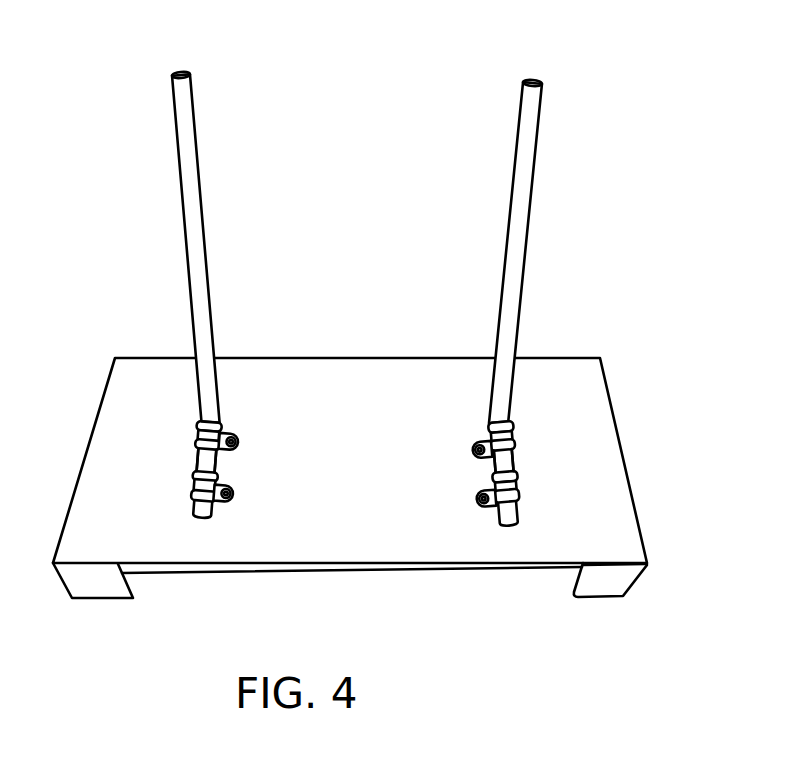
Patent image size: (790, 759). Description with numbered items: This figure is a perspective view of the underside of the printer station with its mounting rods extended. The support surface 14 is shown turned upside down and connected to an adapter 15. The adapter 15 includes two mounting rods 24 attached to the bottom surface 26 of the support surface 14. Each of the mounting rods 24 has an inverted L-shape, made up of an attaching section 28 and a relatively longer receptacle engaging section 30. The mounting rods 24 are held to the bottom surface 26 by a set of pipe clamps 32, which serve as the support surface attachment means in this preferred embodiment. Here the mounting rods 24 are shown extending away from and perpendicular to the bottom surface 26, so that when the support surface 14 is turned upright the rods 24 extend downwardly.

The support surface 14 is at (376, 350).
The adapter 15 is at (463, 229).
The mounting rods 24 is at (351, 350).
The bottom surface 26 is at (357, 518).
The attaching section 28 is at (207, 456).
The receptacle engaging section 30 is at (524, 151).
The pipe clamps 32 is at (200, 424).